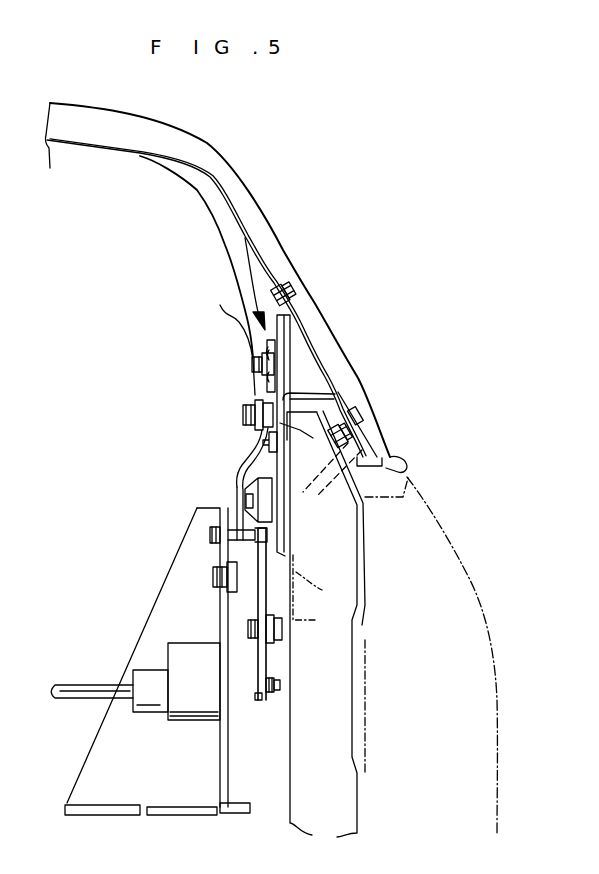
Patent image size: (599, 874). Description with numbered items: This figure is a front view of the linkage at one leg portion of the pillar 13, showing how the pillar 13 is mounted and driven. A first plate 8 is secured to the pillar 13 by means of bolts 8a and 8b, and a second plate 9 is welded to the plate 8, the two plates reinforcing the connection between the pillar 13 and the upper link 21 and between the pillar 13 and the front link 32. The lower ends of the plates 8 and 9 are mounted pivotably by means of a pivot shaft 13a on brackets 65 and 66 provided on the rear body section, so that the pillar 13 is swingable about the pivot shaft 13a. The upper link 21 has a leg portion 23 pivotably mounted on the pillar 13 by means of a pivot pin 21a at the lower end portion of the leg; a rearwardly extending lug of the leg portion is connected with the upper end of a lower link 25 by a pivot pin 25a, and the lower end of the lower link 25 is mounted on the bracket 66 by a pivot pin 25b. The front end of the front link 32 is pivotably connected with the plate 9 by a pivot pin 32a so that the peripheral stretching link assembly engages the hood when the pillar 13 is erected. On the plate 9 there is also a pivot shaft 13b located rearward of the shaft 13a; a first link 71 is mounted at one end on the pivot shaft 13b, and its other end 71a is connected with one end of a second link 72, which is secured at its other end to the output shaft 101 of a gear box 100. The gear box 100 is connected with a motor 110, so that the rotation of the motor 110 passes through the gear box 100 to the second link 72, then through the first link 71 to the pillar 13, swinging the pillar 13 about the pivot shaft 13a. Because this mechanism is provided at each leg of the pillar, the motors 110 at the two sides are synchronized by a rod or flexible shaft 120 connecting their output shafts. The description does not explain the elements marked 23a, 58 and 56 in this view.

The pillar 13 is at (264, 210).
The first plate 8 is at (304, 392).
The bolt 8a is at (290, 277).
The bolt 8b is at (367, 414).
The second plate 9 is at (336, 396).
The upper link 21 is at (238, 258).
The pivot pin 21a is at (258, 340).
The leg portion 23 is at (252, 363).
The bracket plate 23a is at (266, 395).
The lower link 25 is at (250, 478).
The pivot pin 25a is at (243, 415).
The pivot pin 25b is at (213, 578).
The front link 32 is at (255, 438).
The pivot pin 32a is at (262, 445).
The pivot shaft 13a is at (245, 537).
The pivot shaft 13b is at (244, 504).
The bracket 65 is at (307, 575).
The first link 71 is at (272, 565).
The other end of the first link 71a is at (282, 633).
The output shaft 101 is at (280, 685).
The second link 72 is at (257, 700).
The bracket 66 is at (143, 645).
The gear box 100 is at (183, 720).
The motor 110 is at (137, 713).
The flexible shaft 120 is at (70, 683).
The inner panel 58 is at (375, 660).
The fender panel 56 is at (480, 597).